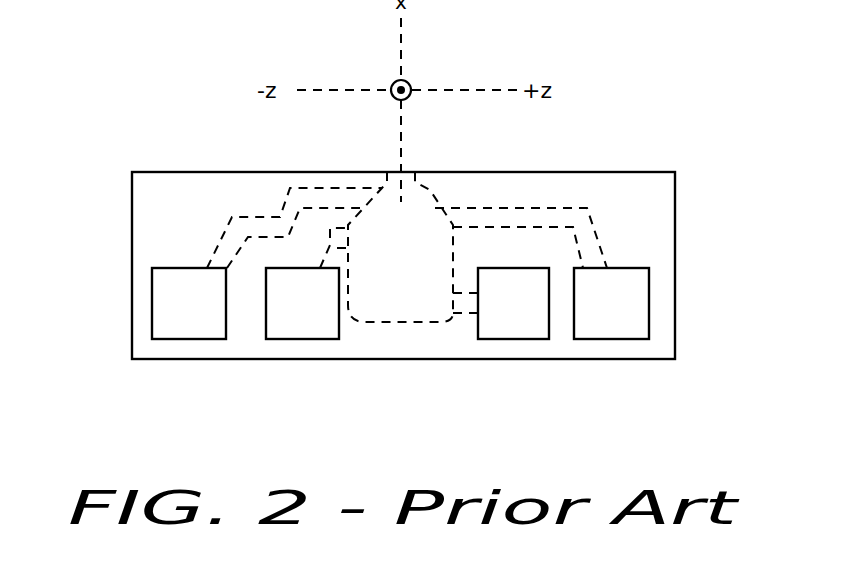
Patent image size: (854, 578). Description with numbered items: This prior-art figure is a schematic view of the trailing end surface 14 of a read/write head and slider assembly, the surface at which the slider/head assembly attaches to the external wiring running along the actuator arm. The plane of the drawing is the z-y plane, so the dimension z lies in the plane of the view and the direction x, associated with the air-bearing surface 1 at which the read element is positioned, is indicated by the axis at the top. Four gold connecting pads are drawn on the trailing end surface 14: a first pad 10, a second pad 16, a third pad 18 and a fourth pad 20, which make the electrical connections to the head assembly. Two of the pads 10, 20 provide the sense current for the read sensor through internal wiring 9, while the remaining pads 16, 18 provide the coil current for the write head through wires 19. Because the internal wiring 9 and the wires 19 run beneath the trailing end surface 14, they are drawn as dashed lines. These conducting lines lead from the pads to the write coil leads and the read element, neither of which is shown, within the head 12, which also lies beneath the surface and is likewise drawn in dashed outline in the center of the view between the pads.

The air-bearing surface 1 is at (147, 172).
The internal wiring 9 is at (243, 228).
The gold pad 10 is at (168, 309).
The head 12 is at (418, 200).
The trailing end surface 14 is at (152, 223).
The gold pad 16 is at (296, 313).
The gold pad 18 is at (508, 312).
The wires 19 is at (326, 238).
The gold pad 20 is at (607, 312).